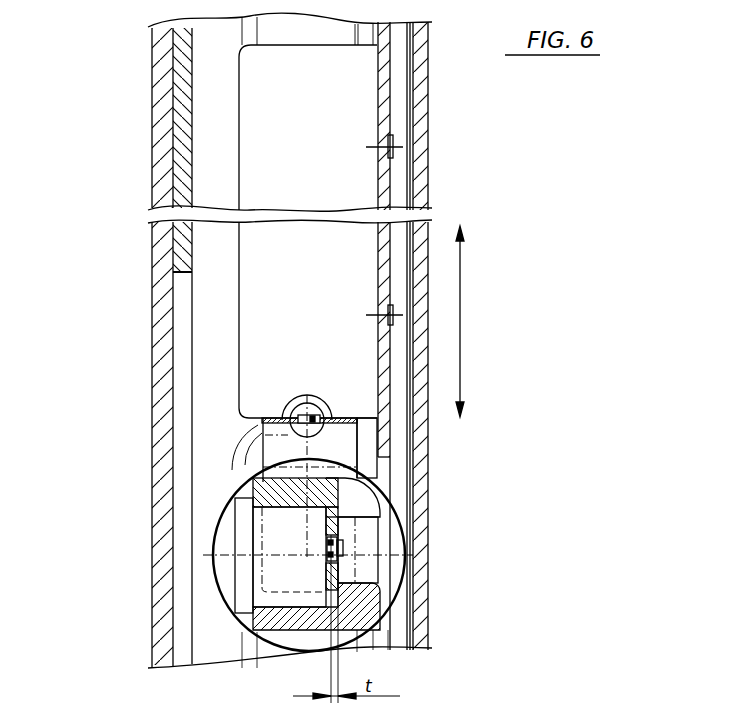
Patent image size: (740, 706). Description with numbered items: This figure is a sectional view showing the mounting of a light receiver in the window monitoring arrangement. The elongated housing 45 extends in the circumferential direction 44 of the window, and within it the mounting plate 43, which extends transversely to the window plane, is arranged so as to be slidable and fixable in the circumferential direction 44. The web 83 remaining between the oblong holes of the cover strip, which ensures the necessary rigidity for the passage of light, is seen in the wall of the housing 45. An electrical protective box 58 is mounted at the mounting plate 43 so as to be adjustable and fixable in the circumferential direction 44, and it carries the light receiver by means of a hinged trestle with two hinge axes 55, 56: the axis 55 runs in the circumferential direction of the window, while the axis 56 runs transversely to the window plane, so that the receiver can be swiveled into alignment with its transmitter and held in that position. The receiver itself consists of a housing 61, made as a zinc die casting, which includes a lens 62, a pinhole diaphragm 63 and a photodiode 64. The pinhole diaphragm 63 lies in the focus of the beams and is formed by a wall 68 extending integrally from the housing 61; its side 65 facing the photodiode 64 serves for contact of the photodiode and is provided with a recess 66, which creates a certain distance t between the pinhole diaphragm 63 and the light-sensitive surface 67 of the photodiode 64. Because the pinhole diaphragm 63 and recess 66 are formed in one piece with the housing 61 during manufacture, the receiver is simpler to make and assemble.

The mounting plate 43 is at (382, 182).
The circumferential direction 44 is at (460, 325).
The housing 45 is at (146, 300).
The hinge axis 55 is at (321, 413).
The hinge axis 56 is at (308, 555).
The electrical protective box 58 is at (315, 305).
The housing 61 is at (270, 620).
The lens 62 is at (245, 520).
The pinhole diaphragm 63 is at (327, 561).
The photodiode 64 is at (363, 565).
The side 65 is at (333, 520).
The recess 66 is at (326, 556).
The light-sensitive surface 67 is at (343, 548).
The wall 68 is at (363, 512).
The web 83 is at (182, 153).